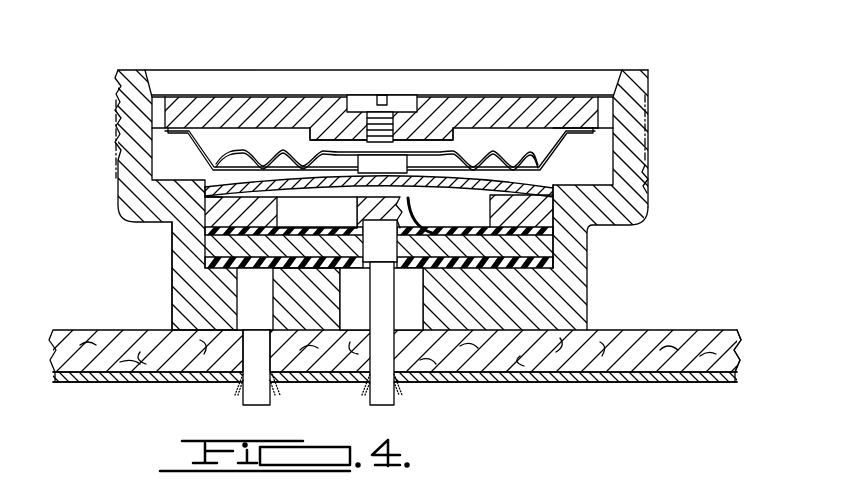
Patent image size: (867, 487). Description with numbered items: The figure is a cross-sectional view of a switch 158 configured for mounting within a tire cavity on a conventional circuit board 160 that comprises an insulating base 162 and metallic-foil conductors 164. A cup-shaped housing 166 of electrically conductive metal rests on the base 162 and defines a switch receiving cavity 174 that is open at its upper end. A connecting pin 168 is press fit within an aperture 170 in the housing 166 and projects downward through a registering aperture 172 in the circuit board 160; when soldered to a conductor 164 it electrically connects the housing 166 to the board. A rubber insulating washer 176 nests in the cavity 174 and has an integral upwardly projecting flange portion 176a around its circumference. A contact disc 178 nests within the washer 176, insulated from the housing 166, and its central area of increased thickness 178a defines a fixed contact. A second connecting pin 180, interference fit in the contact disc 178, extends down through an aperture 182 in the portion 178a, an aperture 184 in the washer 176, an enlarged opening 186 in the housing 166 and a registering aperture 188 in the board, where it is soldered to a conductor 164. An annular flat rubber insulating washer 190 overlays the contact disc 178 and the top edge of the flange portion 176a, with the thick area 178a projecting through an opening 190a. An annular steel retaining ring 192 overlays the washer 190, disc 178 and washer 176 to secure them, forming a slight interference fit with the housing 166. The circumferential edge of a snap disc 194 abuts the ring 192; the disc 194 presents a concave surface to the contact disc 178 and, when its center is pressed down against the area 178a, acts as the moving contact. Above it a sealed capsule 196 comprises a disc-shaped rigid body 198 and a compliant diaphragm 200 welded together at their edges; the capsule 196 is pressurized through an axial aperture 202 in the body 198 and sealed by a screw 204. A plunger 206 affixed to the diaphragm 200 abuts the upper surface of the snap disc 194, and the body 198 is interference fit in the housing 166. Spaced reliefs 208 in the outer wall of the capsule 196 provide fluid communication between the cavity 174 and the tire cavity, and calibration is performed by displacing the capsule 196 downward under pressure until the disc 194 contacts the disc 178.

The switch 158 is at (552, 59).
The circuit board 160 is at (699, 330).
The insulating base 162 is at (713, 358).
The conductors 164 is at (75, 377).
The cup-shaped housing 166 is at (628, 140).
The connecting pin 168 is at (257, 398).
The aperture 170 is at (243, 313).
The registering aperture 172 is at (225, 357).
The switch receiving cavity 174 is at (172, 152).
The rubber insulating washer 176 is at (515, 268).
The flange portion 176a is at (590, 240).
The contact disc 178 is at (233, 243).
The area of increased thickness 178a is at (410, 240).
The connecting pin 180 is at (384, 398).
The aperture 182 is at (335, 288).
The aperture 184 is at (392, 270).
The enlarged opening 186 is at (415, 310).
The registering aperture 188 is at (408, 360).
The annular flat rubber insulating washer 190 is at (220, 228).
The opening 190a is at (347, 222).
The annular steel retaining ring 192 is at (217, 199).
The snap disc 194 is at (428, 197).
The sealed capsule 196 is at (213, 90).
The first rigid wall member 198 is at (288, 100).
The diaphragm 200 is at (578, 128).
The aperture 202 is at (395, 133).
The screw 204 is at (393, 98).
The plunger 206 is at (377, 162).
The reliefs 208 is at (158, 100).